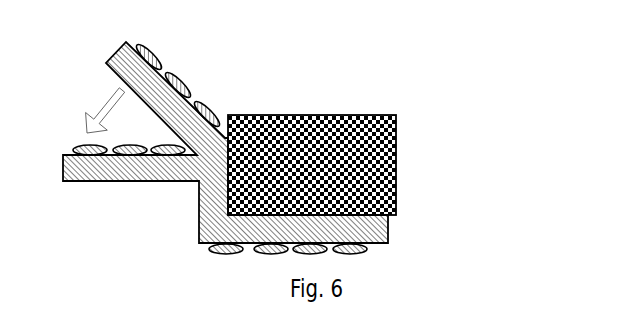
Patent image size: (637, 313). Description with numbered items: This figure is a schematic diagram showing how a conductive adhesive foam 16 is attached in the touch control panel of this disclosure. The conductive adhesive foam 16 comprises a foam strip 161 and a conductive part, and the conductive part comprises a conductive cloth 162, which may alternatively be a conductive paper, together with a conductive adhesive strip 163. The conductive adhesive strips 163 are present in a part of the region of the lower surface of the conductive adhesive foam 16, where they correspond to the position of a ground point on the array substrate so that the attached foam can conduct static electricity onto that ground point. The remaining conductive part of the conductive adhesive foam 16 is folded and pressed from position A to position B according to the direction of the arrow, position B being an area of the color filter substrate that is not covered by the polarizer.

The conductive adhesive foam 16 is at (300, 148).
The foam strip 161 is at (396, 190).
The conductive cloth 162 is at (386, 231).
The conductive adhesive strip 163 is at (363, 252).
The position A is at (120, 55).
The position B is at (92, 170).